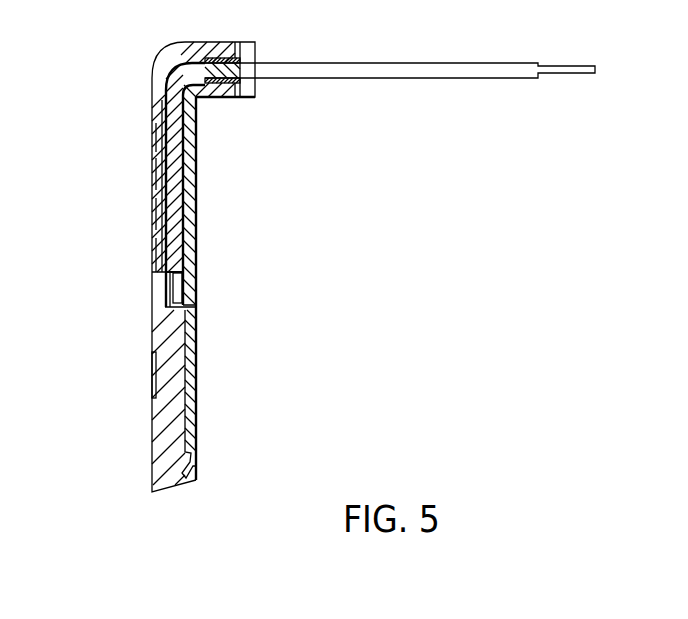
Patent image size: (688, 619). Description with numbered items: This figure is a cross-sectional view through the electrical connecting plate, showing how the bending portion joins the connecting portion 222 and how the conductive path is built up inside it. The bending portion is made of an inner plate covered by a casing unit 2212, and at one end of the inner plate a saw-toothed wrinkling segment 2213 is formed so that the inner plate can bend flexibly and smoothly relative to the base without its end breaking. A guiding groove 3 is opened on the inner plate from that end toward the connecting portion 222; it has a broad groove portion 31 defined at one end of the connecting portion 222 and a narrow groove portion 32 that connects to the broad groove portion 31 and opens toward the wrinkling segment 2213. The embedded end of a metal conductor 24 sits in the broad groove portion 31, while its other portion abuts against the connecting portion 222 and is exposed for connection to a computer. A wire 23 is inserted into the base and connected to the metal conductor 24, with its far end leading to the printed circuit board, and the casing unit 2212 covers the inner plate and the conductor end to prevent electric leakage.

The wire 23 is at (421, 72).
The wrinkling segment 2213 is at (197, 135).
The casing unit 2212 is at (193, 185).
The narrow groove portion 32 is at (182, 253).
The broad groove portion 31 is at (182, 290).
The guiding groove 3 is at (252, 295).
The metal conductor 24 is at (196, 375).
The connecting portion 222 is at (160, 423).